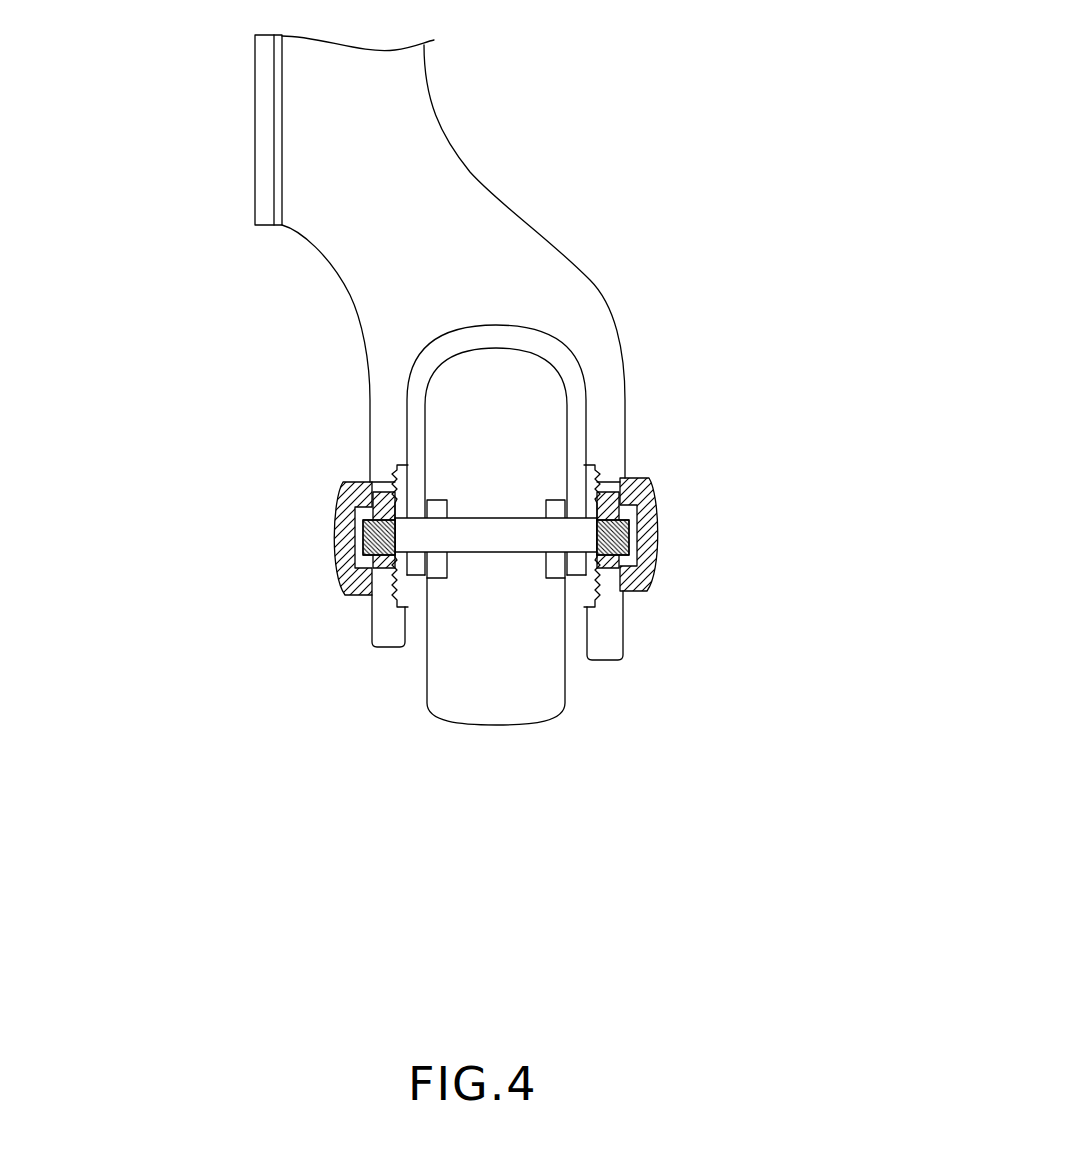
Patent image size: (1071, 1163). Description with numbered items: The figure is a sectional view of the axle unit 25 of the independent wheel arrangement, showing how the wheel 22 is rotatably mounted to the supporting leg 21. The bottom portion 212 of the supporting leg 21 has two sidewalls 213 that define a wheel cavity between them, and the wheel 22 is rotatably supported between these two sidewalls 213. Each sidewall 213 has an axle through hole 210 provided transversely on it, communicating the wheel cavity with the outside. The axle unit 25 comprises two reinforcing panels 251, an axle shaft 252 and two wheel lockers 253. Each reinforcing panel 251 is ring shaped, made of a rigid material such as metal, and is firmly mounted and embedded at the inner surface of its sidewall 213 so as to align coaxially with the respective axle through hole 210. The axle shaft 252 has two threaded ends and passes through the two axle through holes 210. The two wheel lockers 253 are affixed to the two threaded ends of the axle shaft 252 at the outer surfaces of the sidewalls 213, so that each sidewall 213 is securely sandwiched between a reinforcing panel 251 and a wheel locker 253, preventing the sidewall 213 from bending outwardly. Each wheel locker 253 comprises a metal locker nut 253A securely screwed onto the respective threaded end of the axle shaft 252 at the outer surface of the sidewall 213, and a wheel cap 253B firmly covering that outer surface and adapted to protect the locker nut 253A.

The supporting leg 21 is at (507, 227).
The wheel 22 is at (500, 707).
The axle unit 25 is at (800, 703).
The axle through hole 210 is at (378, 491).
The bottom portion 212 is at (416, 632).
The sidewall 213 is at (380, 400).
The reinforcing panel 251 is at (389, 596).
The axle shaft 252 is at (502, 540).
The wheel locker 253 is at (150, 569).
The locker nut 253A is at (355, 507).
The wheel cap 253B is at (341, 578).